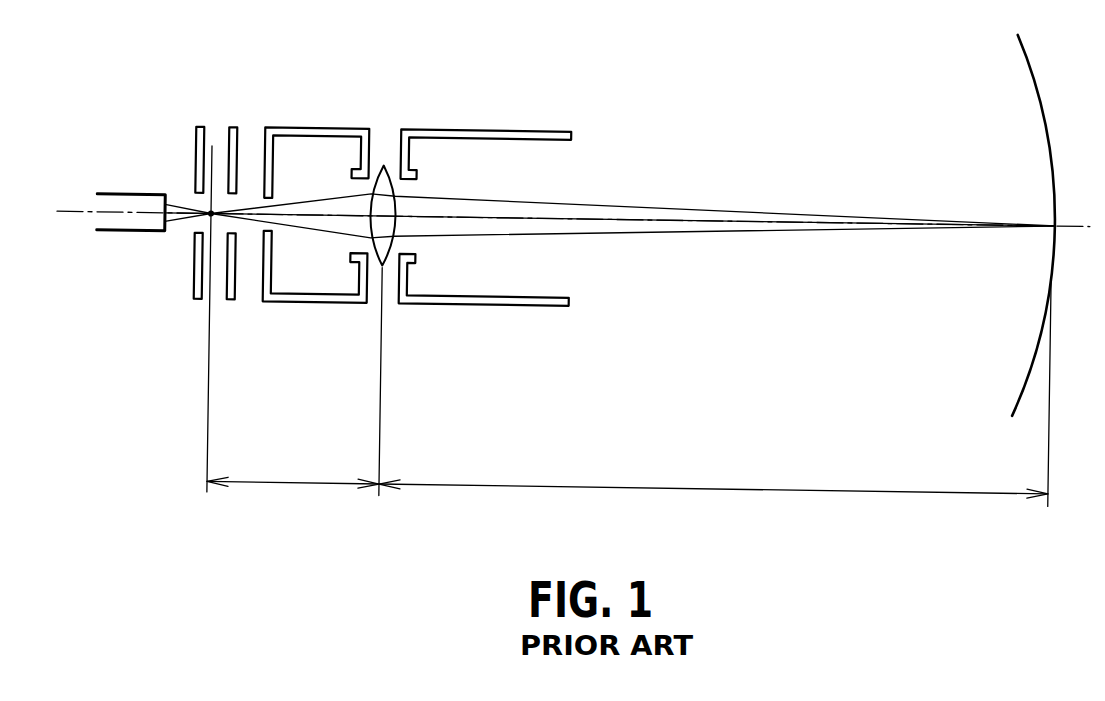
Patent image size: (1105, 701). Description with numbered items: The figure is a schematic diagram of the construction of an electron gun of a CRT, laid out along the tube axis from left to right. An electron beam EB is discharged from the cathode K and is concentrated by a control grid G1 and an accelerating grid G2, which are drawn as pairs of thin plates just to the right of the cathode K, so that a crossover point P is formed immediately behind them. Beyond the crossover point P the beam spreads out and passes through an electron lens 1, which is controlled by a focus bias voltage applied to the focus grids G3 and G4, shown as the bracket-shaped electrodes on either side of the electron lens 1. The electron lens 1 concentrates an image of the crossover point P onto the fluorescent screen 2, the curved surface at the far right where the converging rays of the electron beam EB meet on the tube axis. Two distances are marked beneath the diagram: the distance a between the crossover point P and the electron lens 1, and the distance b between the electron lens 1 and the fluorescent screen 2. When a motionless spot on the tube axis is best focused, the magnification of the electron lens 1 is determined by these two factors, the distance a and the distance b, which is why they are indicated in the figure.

The cathode K is at (119, 196).
The crossover point P is at (207, 217).
The control grid G1 is at (199, 126).
The accelerating grid G2 is at (233, 126).
The focus grid G3 is at (325, 126).
The focus grid G4 is at (491, 126).
The electron lens 1 is at (383, 160).
The fluorescent screen 2 is at (1026, 374).
The electron beam EB is at (694, 202).
The distance between the crossover point and the electron lens a is at (293, 469).
The distance between the electron lens and the fluorescent screen b is at (713, 475).